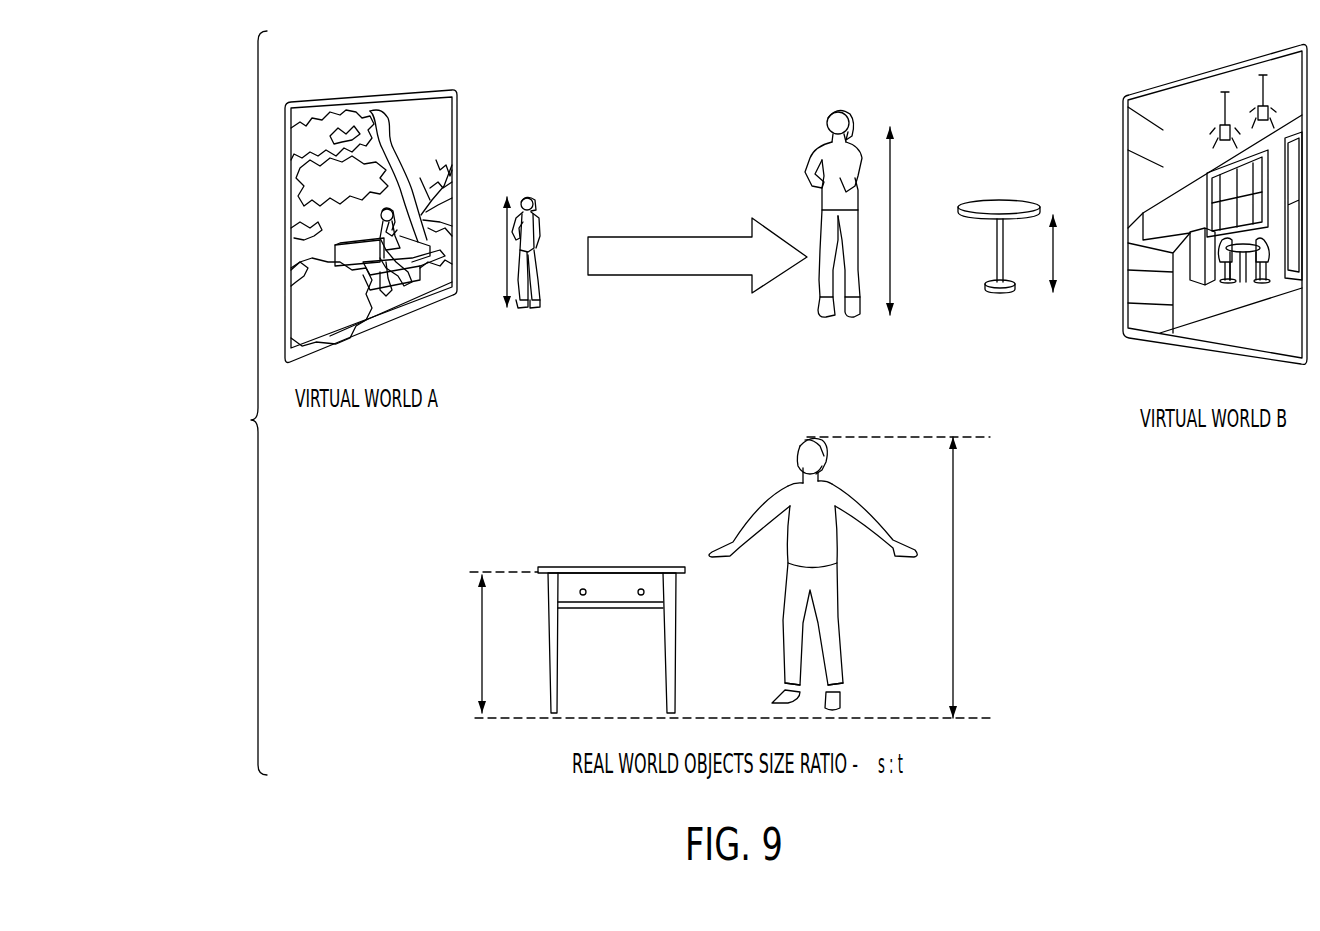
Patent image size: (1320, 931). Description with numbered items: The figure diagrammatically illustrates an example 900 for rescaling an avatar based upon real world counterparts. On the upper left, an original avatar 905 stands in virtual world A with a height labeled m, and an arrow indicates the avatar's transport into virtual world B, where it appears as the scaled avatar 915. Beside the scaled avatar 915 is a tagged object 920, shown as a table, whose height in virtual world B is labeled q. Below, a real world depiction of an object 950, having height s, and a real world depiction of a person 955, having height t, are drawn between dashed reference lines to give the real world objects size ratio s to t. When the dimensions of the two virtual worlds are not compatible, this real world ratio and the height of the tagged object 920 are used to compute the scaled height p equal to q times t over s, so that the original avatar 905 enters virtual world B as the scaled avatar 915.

The example for rescaling an avatar 900 is at (230, 65).
The original avatar 905 is at (527, 172).
The scaled avatar 915 is at (862, 94).
The tagged object 920 is at (1037, 172).
The real world depiction of an object 950 is at (598, 534).
The real world depiction of a person 955 is at (770, 456).